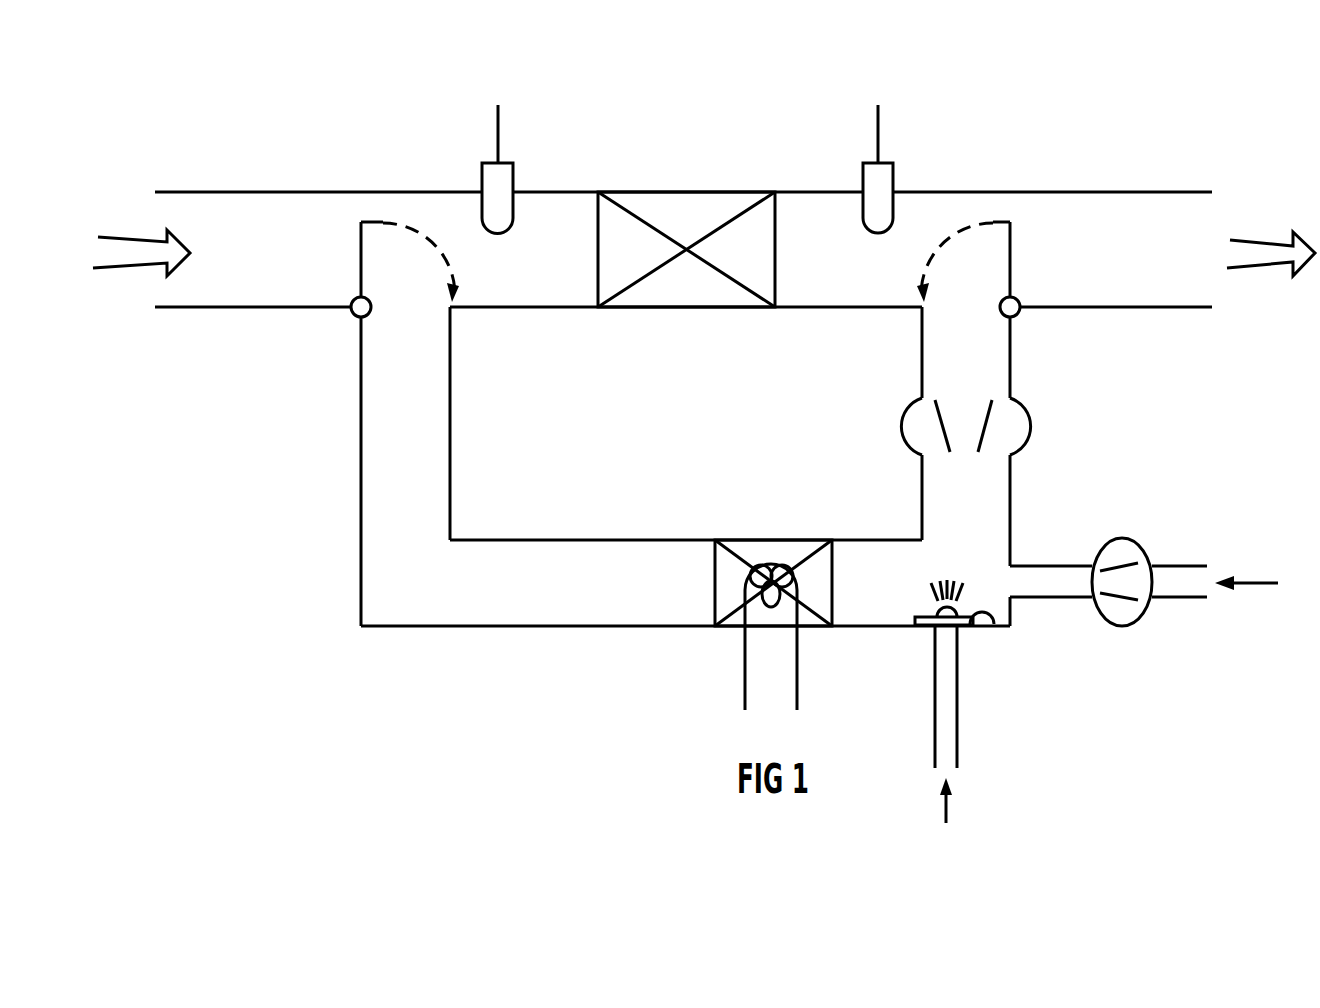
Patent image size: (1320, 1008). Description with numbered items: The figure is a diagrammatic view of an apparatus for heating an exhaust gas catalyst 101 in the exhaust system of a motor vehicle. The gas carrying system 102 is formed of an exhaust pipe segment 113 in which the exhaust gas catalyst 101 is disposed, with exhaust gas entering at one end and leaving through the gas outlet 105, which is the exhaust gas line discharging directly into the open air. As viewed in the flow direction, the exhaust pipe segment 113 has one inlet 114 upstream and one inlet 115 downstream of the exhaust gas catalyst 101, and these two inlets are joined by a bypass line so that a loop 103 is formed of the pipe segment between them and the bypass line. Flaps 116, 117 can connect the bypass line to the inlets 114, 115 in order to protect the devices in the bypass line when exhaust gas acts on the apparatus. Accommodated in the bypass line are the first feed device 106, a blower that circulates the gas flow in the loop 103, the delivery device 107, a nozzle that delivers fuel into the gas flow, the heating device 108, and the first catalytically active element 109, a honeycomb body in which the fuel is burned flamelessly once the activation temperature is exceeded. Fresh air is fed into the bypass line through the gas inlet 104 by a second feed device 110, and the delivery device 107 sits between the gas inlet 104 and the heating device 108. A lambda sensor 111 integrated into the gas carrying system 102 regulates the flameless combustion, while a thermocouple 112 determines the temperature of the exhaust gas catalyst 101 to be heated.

The exhaust gas catalyst 101 is at (678, 205).
The gas carrying system 102 is at (556, 192).
The loop 103 is at (361, 561).
The gas inlet 104 is at (1050, 566).
The gas outlet 105 is at (1185, 192).
The first feed device 106 is at (1027, 426).
The delivery device 107 is at (988, 622).
The heating device 108 is at (741, 682).
The first catalytically active element 109 is at (720, 592).
The second feed device 110 is at (1113, 618).
The lambda sensor 111 is at (483, 181).
The thermocouple 112 is at (893, 182).
The exhaust pipe segment 113 is at (201, 192).
The inlet 114 is at (405, 305).
The inlet 115 is at (963, 303).
The flap 116 is at (362, 258).
The flap 117 is at (1012, 257).